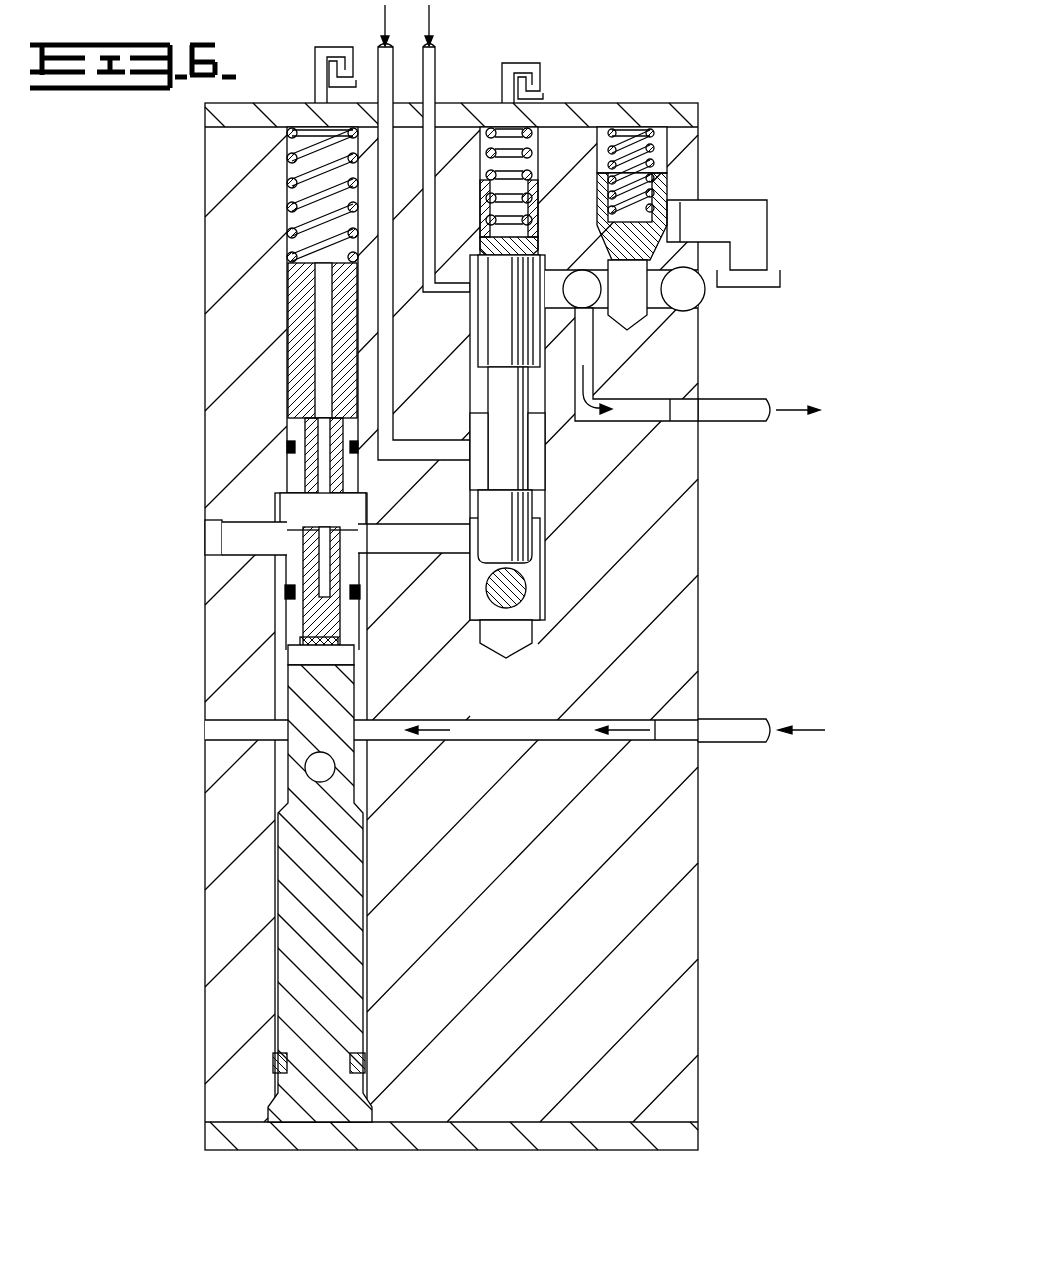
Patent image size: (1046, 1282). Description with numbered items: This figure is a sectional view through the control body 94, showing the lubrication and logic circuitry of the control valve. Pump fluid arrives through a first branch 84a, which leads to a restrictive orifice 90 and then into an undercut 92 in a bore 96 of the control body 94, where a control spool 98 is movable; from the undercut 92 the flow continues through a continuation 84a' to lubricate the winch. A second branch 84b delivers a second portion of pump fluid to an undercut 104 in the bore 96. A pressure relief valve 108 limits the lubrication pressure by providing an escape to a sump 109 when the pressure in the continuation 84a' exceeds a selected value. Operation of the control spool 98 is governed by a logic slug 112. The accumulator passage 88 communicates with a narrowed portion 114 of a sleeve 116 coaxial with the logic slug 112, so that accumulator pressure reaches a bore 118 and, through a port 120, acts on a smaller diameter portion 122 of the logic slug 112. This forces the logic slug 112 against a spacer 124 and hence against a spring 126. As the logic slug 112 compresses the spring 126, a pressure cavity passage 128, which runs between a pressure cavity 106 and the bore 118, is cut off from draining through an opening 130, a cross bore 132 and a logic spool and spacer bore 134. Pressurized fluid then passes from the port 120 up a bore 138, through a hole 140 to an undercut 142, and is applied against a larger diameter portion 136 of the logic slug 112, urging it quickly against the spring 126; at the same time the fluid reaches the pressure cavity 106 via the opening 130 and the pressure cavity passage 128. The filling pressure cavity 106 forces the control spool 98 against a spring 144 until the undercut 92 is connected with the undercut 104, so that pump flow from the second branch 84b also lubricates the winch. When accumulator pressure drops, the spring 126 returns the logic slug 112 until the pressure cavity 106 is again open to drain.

The first branch of passage 84a is at (475, 148).
The continuation of passage 84A 84a' is at (751, 380).
The second branch of passage 84b is at (405, 345).
The accumulator passage 88 is at (728, 727).
The restrictive orifice 90 is at (445, 150).
The undercut 92 is at (472, 312).
The control body 94 is at (250, 358).
The bore 96 is at (473, 398).
The control spool 98 is at (512, 448).
The undercut 104 is at (395, 500).
The pressure cavity 106 is at (533, 605).
The pressure relief valve 108 is at (668, 186).
The sump 109 is at (772, 282).
The logic slug 112 is at (300, 452).
The narrowed portion 114 is at (290, 758).
The sleeve 116 is at (357, 932).
The bore 118 is at (366, 696).
The port 120 is at (345, 648).
The smaller diameter portion 122 is at (307, 657).
The spacer 124 is at (293, 288).
The spring 126 is at (292, 158).
The pressure cavity passage 128 is at (413, 553).
The opening 130 is at (370, 565).
The cross bore 132 is at (305, 522).
The logic spool and spacer bore 134 is at (318, 320).
The larger diameter portion 136 is at (303, 430).
The bore 138 is at (318, 668).
The hole 140 is at (292, 590).
The undercut 142 is at (355, 510).
The spring 144 is at (527, 130).